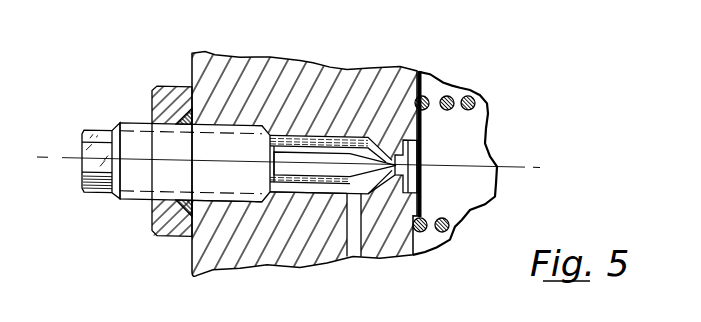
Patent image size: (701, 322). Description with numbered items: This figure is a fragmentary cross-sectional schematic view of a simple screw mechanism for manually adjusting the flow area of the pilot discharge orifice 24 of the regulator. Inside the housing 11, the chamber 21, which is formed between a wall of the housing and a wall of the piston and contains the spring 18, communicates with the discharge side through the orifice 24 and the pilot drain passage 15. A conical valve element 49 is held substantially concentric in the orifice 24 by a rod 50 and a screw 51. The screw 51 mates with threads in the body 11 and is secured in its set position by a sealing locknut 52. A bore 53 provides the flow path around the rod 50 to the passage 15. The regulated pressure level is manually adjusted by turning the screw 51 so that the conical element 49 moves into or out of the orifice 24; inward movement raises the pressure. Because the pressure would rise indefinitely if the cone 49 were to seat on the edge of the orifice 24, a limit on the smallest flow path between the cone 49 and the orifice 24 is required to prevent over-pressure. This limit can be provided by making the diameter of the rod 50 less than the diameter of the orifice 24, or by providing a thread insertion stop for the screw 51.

The housing 11 is at (287, 59).
The pilot drain passage 15 is at (356, 242).
The spring 18 is at (472, 88).
The chamber 21 is at (467, 148).
The orifice 24 is at (393, 174).
The conical valve element 49 is at (418, 65).
The rod 50 is at (328, 140).
The screw 51 is at (231, 200).
The sealing locknut 52 is at (165, 236).
The bore 53 is at (293, 195).